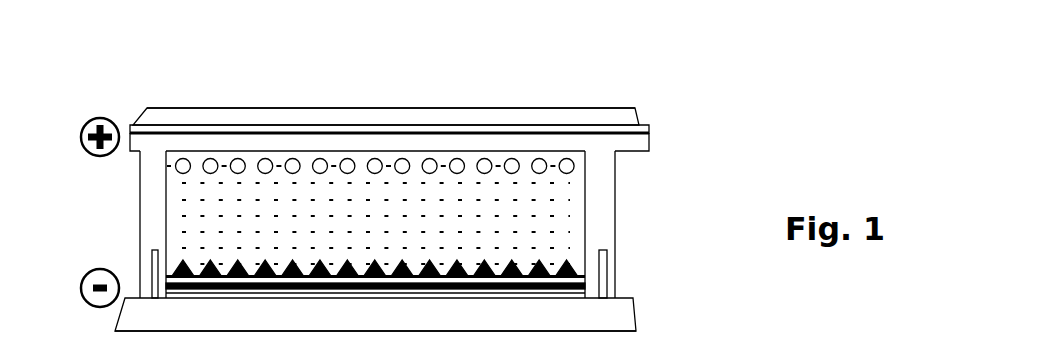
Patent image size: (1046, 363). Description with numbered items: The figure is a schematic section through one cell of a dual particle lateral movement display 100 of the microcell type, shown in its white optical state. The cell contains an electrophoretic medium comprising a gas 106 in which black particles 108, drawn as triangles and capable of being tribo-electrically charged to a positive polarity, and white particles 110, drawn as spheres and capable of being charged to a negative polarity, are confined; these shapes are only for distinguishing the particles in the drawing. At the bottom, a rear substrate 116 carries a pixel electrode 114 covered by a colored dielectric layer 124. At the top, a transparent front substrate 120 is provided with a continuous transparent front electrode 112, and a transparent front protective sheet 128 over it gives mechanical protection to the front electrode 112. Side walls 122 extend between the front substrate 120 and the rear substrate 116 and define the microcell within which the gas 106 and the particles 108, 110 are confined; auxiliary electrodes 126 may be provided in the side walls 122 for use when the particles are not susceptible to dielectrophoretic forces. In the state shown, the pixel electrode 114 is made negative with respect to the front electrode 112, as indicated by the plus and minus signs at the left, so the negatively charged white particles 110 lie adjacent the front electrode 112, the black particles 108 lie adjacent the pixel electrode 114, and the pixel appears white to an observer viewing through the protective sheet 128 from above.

The dual particle lateral movement display 100 is at (165, 110).
The gas 106 is at (507, 222).
The black particles 108 is at (346, 262).
The white particles 110 is at (265, 160).
The front electrode 112 is at (605, 128).
The pixel electrode 114 is at (545, 290).
The rear substrate 116 is at (552, 318).
The front substrate 120 is at (418, 142).
The side walls 122 is at (140, 222).
The colored dielectric layer 124 is at (560, 283).
The auxiliary electrodes 126 is at (152, 270).
The front protective sheet 128 is at (587, 113).